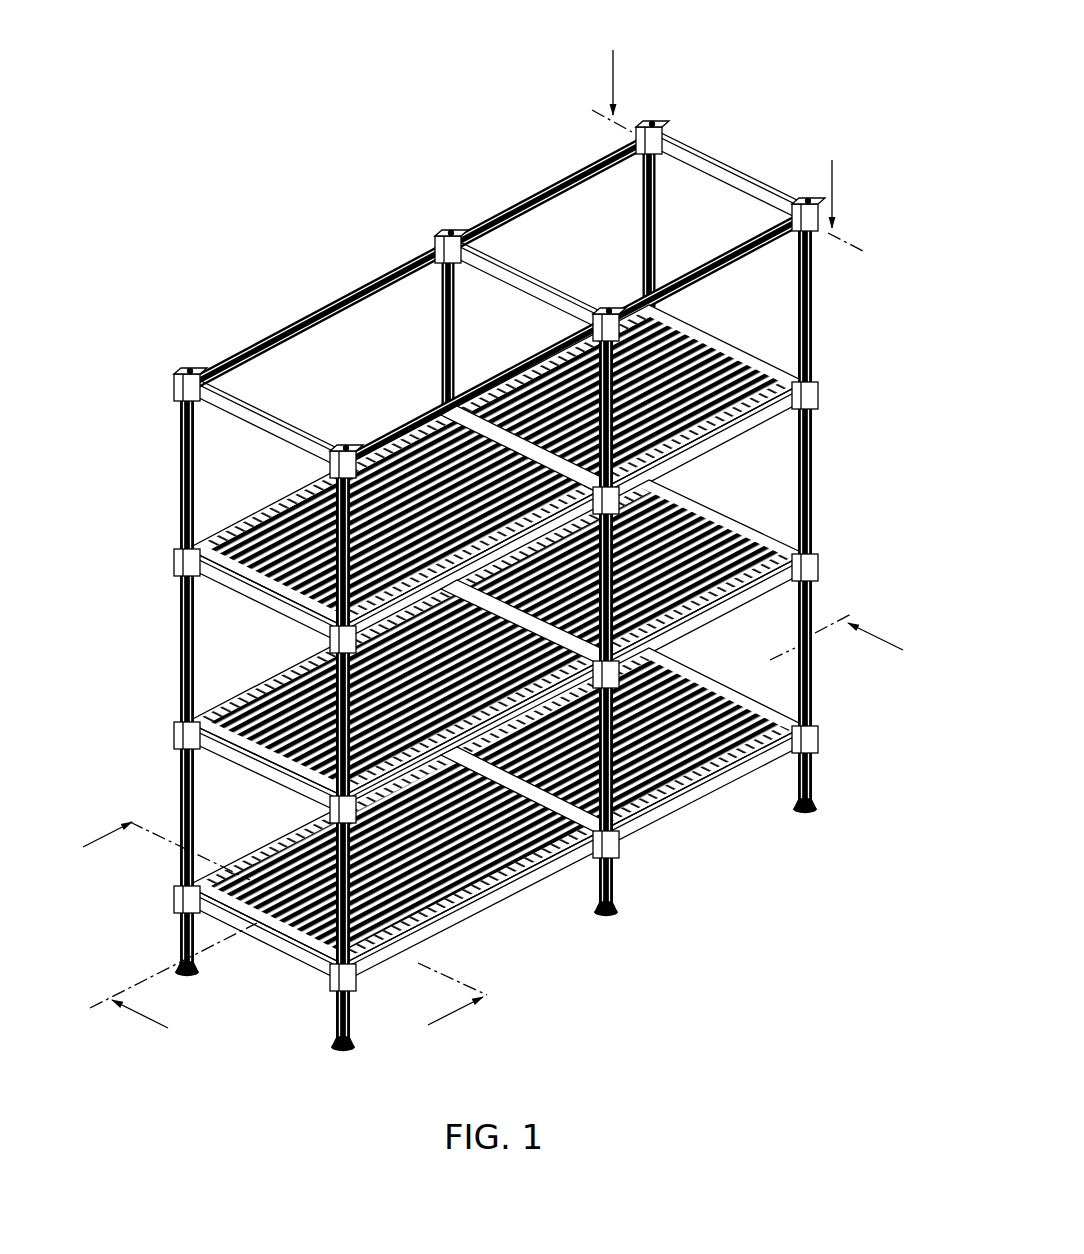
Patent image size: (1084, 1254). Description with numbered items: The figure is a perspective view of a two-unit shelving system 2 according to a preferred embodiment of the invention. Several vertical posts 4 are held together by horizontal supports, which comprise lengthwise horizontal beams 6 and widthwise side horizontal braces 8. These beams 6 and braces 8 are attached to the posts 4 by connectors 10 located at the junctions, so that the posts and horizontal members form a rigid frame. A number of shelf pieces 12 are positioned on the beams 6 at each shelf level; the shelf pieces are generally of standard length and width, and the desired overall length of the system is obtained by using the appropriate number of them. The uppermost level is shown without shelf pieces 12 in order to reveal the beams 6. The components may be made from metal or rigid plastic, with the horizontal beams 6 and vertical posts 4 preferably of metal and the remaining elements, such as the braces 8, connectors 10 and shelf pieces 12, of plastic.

The shelving system 2 is at (487, 537).
The vertical posts 4 is at (182, 498).
The lengthwise horizontal beams 6 is at (370, 287).
The widthwise side horizontal braces 8 is at (223, 590).
The connectors 10 is at (172, 377).
The shelf pieces 12 is at (753, 360).